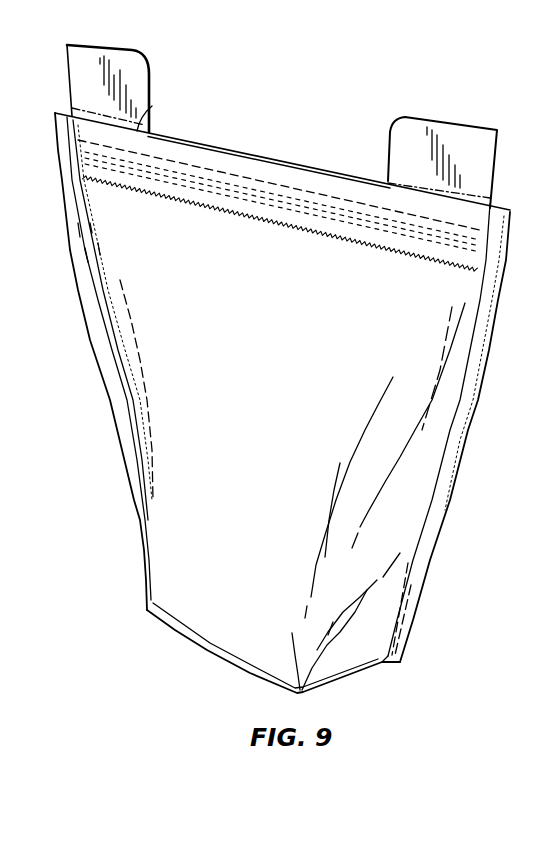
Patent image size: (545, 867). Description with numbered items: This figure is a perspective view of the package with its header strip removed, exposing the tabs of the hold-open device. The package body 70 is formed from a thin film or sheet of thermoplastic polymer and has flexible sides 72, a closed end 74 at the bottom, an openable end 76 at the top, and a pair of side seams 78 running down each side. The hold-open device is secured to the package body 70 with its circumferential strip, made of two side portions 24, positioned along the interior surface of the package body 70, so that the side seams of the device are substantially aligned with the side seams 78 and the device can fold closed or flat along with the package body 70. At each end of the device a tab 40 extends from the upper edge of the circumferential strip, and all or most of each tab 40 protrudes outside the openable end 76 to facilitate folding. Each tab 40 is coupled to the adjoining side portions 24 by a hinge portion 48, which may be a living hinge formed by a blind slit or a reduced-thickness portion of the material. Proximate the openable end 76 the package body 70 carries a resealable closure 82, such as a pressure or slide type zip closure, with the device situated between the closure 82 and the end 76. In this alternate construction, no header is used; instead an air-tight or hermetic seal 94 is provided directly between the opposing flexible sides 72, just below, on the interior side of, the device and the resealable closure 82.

The side portion 24 is at (270, 158).
The tab 40 is at (122, 68).
The hinge portion 48 is at (93, 114).
The package body 70 is at (183, 342).
The flexible sides 72 is at (290, 419).
The closed end 74 is at (193, 647).
The openable end 76 is at (151, 108).
The side seams 78 is at (125, 442).
The resealable closure 82 is at (340, 212).
The seal 94 is at (262, 222).